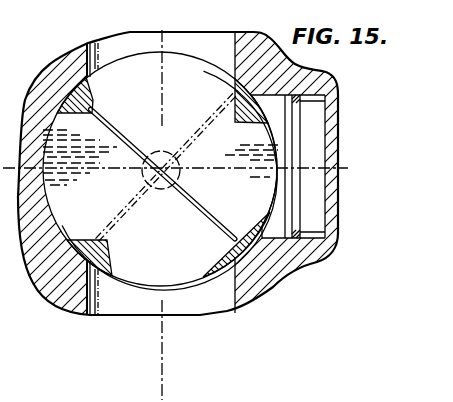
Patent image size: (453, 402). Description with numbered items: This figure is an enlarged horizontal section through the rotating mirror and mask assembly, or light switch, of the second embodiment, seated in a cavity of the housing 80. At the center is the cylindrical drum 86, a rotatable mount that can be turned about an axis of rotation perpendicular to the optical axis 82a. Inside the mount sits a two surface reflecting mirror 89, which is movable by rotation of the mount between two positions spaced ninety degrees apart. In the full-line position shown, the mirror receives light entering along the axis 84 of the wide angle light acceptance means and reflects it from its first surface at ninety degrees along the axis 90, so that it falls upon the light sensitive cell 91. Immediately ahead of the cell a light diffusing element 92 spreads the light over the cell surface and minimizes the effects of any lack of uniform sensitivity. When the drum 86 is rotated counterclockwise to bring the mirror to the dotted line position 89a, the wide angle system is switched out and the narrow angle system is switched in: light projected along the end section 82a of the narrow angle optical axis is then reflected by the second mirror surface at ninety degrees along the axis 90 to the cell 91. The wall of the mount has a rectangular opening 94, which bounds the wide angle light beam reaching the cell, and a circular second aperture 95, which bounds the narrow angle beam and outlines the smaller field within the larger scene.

The housing 80 is at (43, 66).
The end section of optical axis 82a is at (163, 365).
The axis of wide angle light acceptance means 84 is at (163, 30).
The cylindrical drum 86 is at (98, 196).
The two surface reflecting mirror 89 is at (130, 141).
The dotted line position of mirror 89a is at (121, 215).
The axis 90 is at (214, 170).
The light sensitive cell 91 is at (308, 163).
The light diffusing element 92 is at (288, 125).
The rectangular opening 94 is at (273, 193).
The second aperture 95 is at (137, 279).